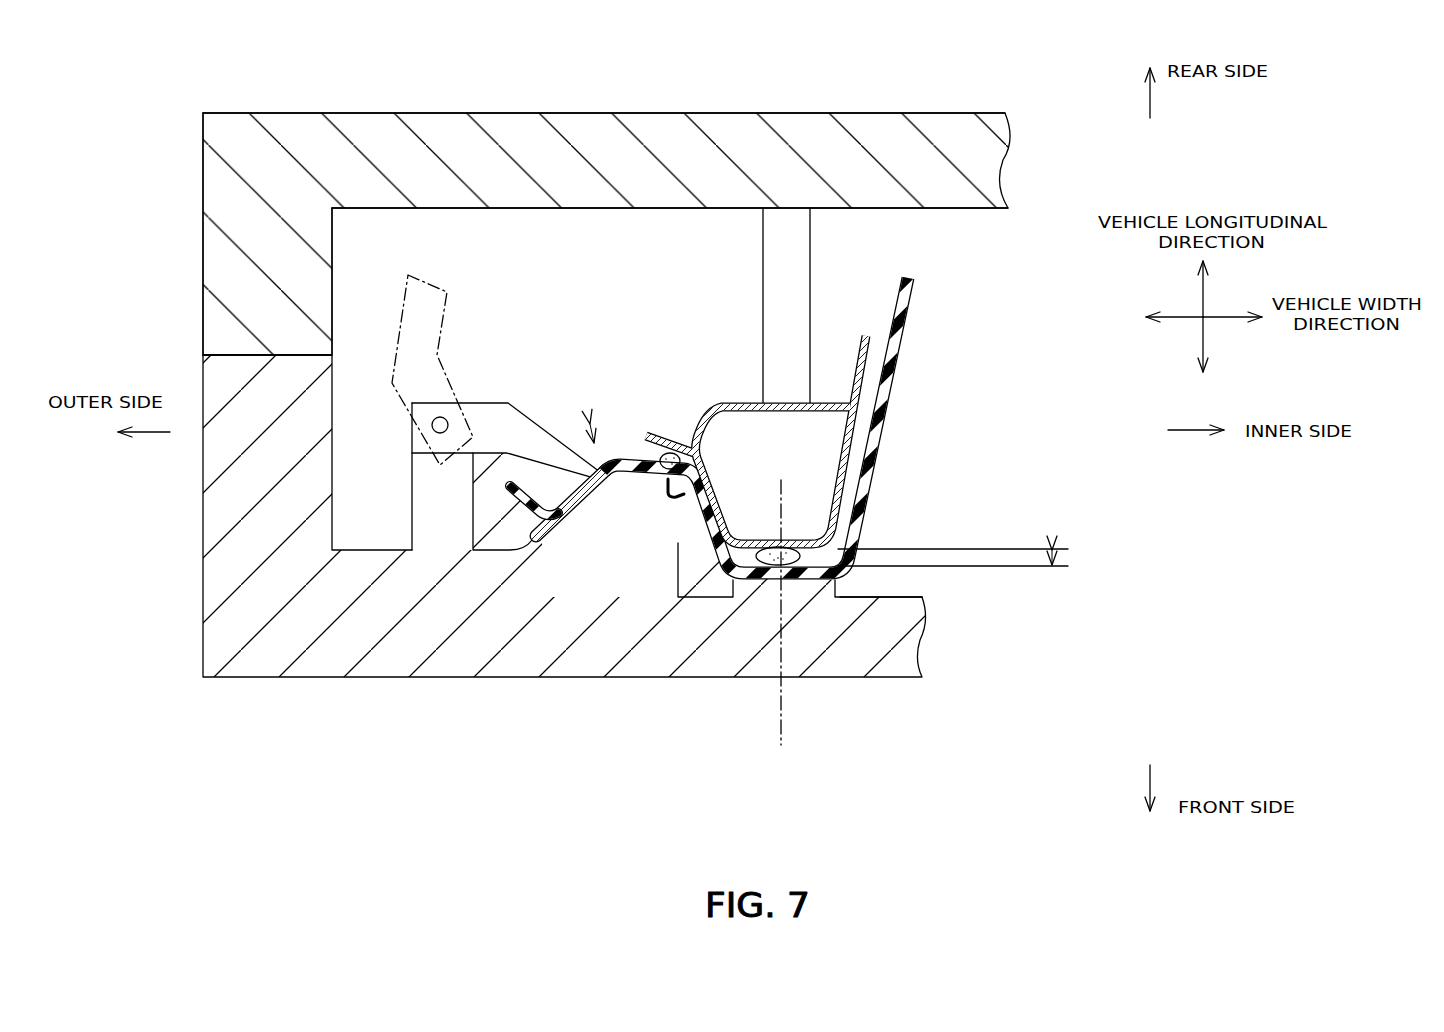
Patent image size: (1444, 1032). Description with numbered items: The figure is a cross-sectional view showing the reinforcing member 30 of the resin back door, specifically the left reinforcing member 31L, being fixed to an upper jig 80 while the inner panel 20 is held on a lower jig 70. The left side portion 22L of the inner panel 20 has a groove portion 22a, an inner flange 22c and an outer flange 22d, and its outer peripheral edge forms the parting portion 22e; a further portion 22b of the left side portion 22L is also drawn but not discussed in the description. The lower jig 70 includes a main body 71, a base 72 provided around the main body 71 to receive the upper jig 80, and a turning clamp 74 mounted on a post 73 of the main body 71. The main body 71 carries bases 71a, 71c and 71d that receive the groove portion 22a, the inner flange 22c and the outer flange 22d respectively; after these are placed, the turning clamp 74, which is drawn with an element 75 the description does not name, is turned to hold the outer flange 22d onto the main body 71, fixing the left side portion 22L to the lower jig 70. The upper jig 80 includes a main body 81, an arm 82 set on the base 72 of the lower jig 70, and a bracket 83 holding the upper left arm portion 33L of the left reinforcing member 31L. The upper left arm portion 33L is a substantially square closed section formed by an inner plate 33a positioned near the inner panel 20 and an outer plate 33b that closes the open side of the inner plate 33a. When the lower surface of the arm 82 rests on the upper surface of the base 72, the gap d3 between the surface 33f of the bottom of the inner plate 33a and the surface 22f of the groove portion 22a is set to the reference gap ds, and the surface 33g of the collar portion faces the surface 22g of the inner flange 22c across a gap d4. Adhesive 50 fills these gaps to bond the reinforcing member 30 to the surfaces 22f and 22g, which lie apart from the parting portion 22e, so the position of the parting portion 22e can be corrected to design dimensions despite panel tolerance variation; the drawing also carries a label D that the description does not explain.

The inner panel 20 is at (745, 521).
The left side portion 22L is at (745, 521).
The groove portion 22a is at (803, 582).
The side wall portion of panel 22b is at (915, 290).
The inner flange 22c is at (652, 478).
The outer flange 22d is at (578, 503).
The parting portion 22e is at (506, 492).
The surface of groove portion 22f is at (712, 550).
The surface of inner flange 22g is at (606, 474).
The reinforcing member 30 is at (769, 403).
The left reinforcing member 31L is at (769, 403).
The upper left arm portion 33L is at (769, 413).
The inner plate 33a is at (870, 440).
The outer plate 33b is at (700, 418).
The surface of bottom portion of inner plate 33f is at (845, 520).
The surface of collar portion 33g is at (655, 438).
The adhesive 50 is at (666, 452).
The lower jig 70 is at (592, 600).
The main body 71 is at (753, 657).
The base 71a is at (872, 588).
The base 71c is at (672, 500).
The base 71d is at (530, 540).
The base 72 is at (203, 507).
The post 73 is at (412, 488).
The turning clamp 74 is at (492, 400).
The pin 75 is at (432, 426).
The upper jig 80 is at (608, 219).
The main body 81 is at (868, 127).
The arm 82 is at (203, 305).
The bracket 83 is at (812, 270).
The gap d4 is at (586, 428).
The reference gap ds is at (1011, 553).
The gap d3 is at (1072, 556).
The section line D is at (784, 487).